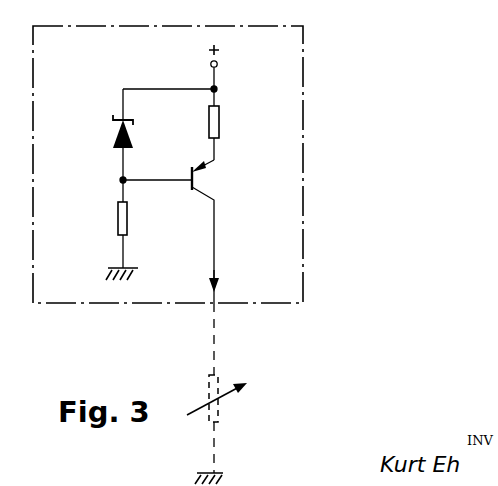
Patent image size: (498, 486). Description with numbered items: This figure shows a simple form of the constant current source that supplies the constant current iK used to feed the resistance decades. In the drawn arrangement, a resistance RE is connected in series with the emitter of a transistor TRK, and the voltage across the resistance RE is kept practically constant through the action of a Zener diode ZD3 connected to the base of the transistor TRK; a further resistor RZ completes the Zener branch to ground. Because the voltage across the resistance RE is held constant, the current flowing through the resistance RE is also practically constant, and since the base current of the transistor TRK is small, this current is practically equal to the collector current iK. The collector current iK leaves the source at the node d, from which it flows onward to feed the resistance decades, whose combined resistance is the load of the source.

The Zener diode ZD3 is at (100, 147).
The resistance RE is at (230, 122).
The transistor TRK is at (225, 225).
The zener bias resistor RZ is at (138, 224).
The constant current iK is at (228, 286).
The output node d is at (225, 339).